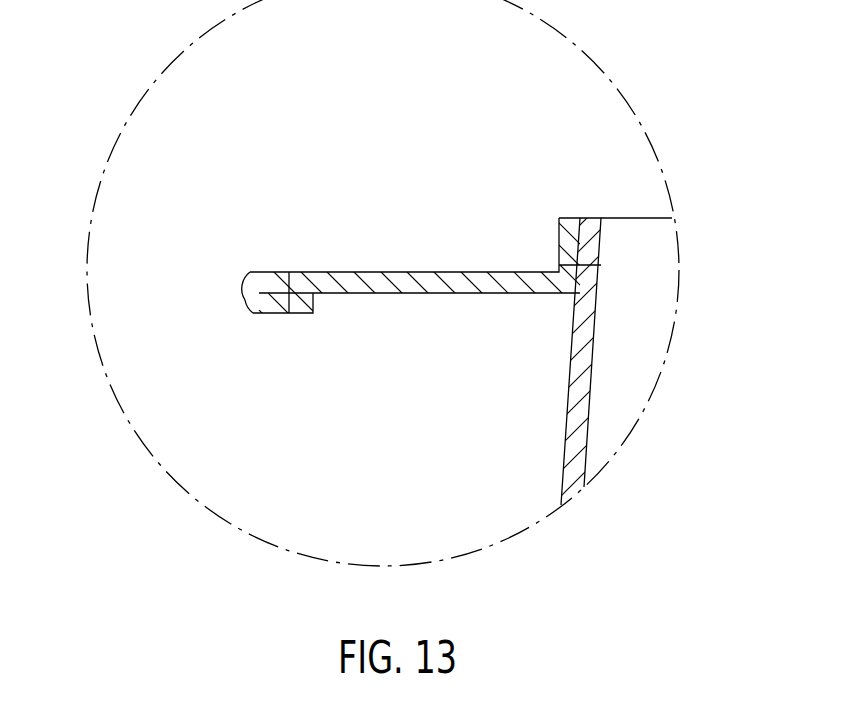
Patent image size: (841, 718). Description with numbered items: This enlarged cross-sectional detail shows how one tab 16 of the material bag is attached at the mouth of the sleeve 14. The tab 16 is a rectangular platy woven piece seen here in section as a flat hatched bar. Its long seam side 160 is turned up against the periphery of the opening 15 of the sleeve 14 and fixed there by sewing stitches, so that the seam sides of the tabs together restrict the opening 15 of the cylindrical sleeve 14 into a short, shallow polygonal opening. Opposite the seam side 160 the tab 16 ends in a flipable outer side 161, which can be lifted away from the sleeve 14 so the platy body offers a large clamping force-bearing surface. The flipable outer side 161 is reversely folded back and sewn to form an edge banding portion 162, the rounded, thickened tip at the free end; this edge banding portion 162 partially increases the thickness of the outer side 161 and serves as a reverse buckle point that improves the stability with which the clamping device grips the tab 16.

The sleeve 14 is at (595, 363).
The opening 15 is at (632, 240).
The tab 16 is at (465, 272).
The seam side 160 is at (565, 218).
The flipable outer side 161 is at (268, 280).
The edge banding portion 162 is at (262, 310).